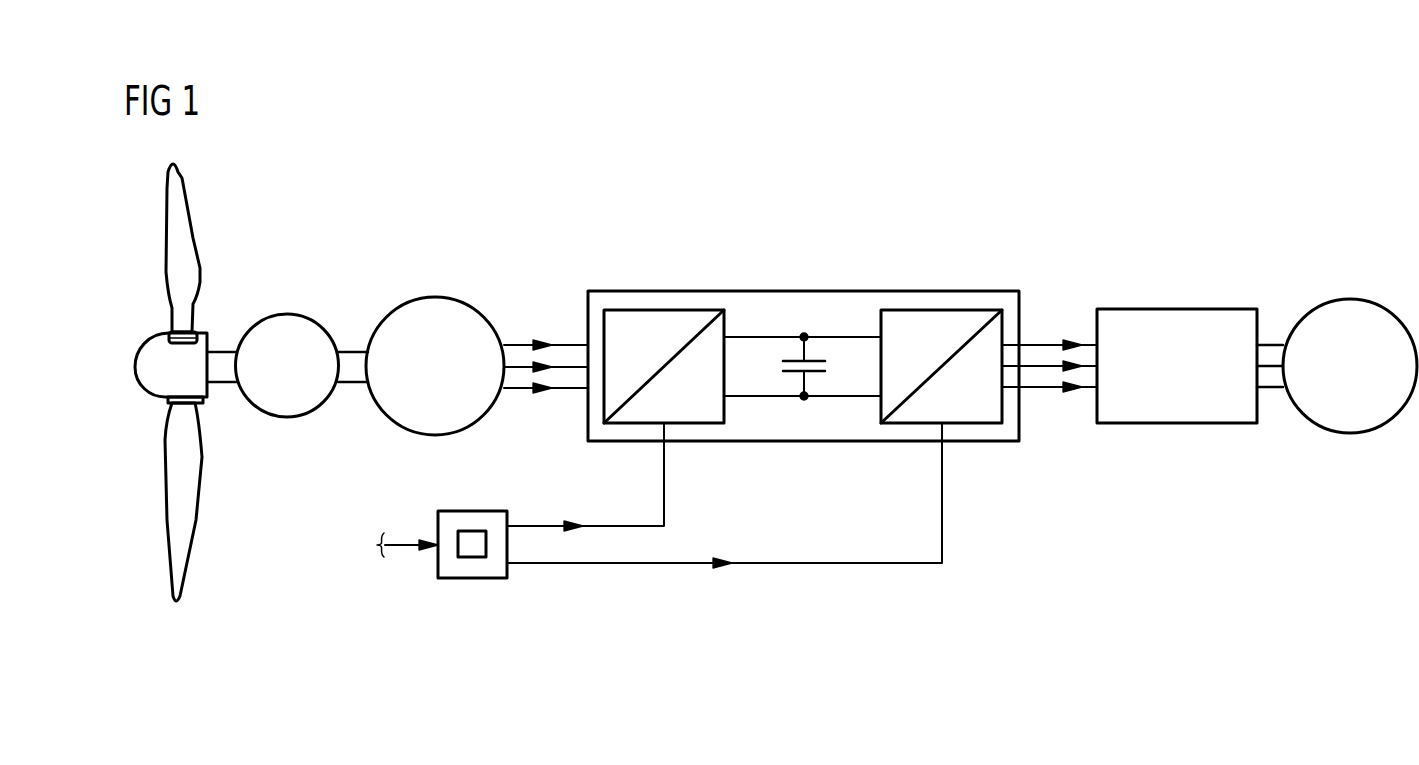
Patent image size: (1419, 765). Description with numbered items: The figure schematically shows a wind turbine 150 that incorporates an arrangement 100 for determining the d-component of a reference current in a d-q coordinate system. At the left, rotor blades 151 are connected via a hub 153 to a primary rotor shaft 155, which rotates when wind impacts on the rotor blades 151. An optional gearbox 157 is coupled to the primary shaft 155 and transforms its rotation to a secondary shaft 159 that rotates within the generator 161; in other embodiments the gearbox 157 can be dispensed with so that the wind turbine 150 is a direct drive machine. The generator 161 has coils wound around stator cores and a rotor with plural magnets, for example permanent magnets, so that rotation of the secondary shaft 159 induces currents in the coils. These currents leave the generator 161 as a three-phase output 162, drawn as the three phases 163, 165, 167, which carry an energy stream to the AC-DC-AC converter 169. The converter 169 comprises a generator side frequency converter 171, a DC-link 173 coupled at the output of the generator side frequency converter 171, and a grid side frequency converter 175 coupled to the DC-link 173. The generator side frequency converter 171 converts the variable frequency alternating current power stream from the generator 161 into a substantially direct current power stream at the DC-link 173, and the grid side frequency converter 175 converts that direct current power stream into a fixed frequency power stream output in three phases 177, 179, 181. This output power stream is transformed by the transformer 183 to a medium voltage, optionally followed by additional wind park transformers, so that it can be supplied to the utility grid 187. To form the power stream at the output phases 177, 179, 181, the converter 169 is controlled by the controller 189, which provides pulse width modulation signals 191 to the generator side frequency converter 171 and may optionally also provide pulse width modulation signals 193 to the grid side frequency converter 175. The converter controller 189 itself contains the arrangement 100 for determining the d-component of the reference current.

The arrangement for determining a d-component of a reference current 100 is at (472, 557).
The wind turbine 150 is at (1277, 150).
The rotor blades 151 is at (193, 230).
The hub 153 is at (152, 350).
The primary rotor shaft 155 is at (224, 356).
The gearbox 157 is at (290, 313).
The secondary shaft 159 is at (346, 356).
The generator 161 is at (431, 297).
The three-phase power output 162 is at (535, 279).
The phase 163 is at (553, 343).
The phase 165 is at (552, 366).
The phase 167 is at (556, 393).
The AC-DC-AC converter 169 is at (760, 291).
The generator side frequency converter 171 is at (663, 310).
The DC-link 173 is at (814, 314).
The grid side frequency converter 175 is at (941, 310).
The phase 177 is at (1082, 343).
The phase 179 is at (1082, 365).
The phase 181 is at (1080, 392).
The transformer 183 is at (1176, 309).
The utility grid 187 is at (1350, 299).
The controller 189 is at (478, 511).
The pulse width modulation signals 191 is at (582, 526).
The pulse width modulation signals 193 is at (732, 563).